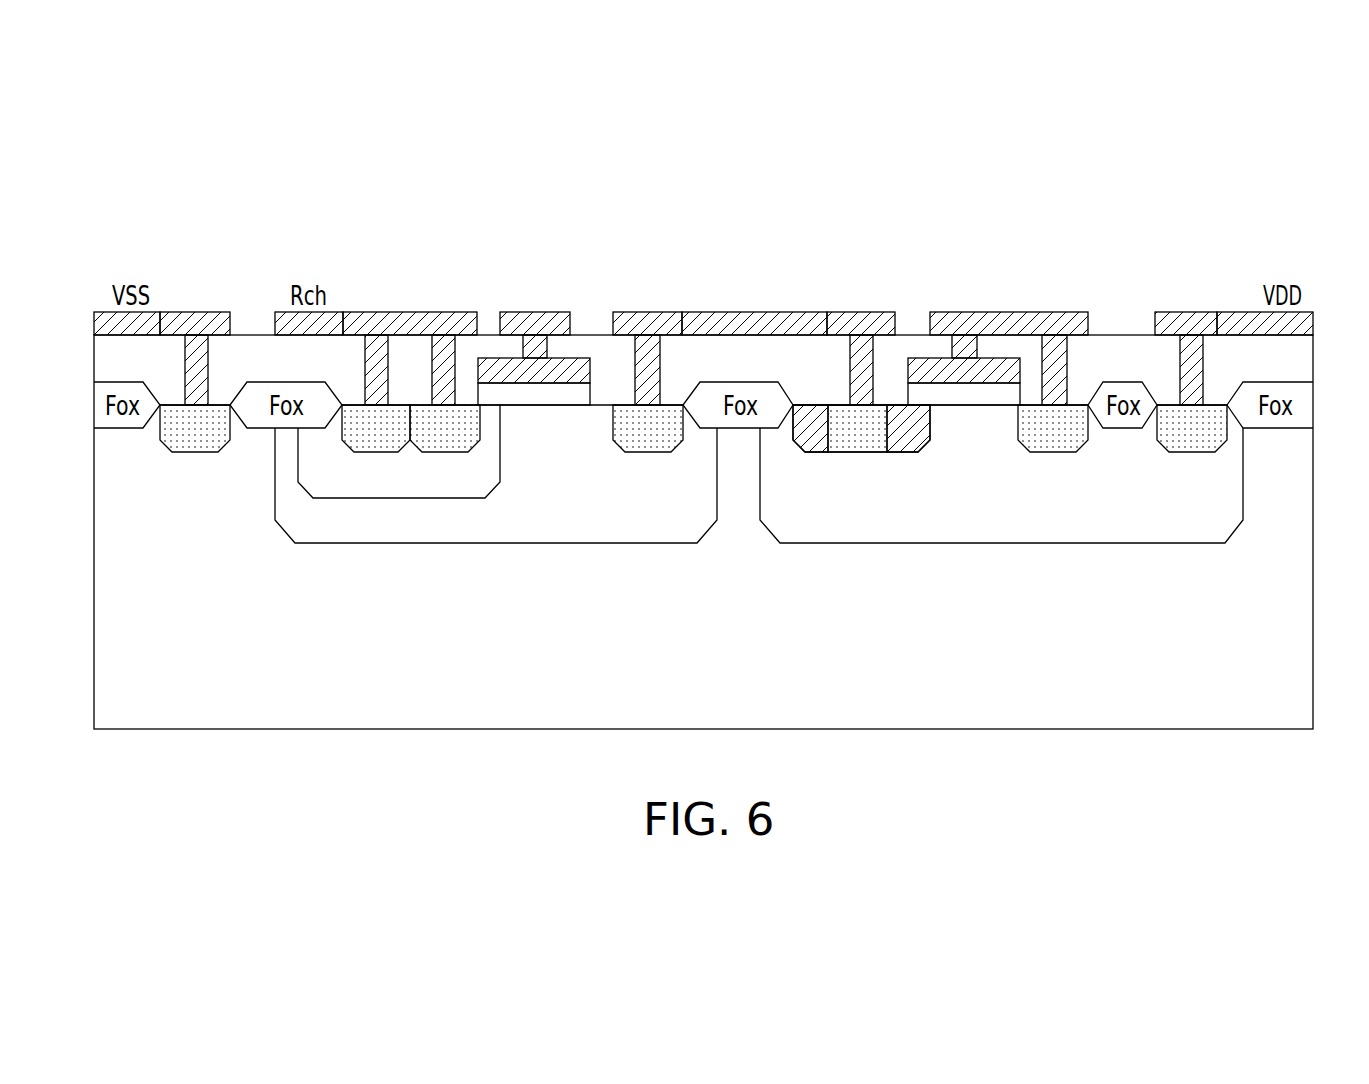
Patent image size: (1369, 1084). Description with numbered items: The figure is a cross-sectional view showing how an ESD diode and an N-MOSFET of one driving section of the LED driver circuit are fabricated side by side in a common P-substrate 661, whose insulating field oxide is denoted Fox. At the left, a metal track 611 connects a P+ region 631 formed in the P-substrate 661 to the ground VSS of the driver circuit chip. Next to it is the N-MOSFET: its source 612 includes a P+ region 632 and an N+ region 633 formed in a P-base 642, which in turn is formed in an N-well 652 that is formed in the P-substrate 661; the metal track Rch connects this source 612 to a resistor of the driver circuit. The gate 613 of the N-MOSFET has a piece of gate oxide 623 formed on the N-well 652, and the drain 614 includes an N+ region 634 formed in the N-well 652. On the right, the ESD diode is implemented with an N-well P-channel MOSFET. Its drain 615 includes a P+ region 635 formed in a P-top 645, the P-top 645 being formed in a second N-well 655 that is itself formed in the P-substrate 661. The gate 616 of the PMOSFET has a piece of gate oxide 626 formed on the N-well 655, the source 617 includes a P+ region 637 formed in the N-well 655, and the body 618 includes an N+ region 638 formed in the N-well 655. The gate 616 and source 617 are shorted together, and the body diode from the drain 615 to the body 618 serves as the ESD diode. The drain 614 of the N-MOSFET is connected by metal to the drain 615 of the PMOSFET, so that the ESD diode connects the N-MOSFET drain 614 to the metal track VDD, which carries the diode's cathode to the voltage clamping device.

The metal track 611 is at (195, 267).
The source 612 is at (415, 267).
The gate 613 is at (535, 267).
The drain 614 is at (647, 267).
The drain 615 is at (860, 267).
The gate 616 is at (965, 267).
The source 617 is at (1058, 267).
The body 618 is at (1190, 267).
The gate oxide 623 is at (558, 397).
The gate oxide 626 is at (963, 397).
The P+ region 631 is at (188, 452).
The P+ region 632 is at (343, 438).
The N+ region 633 is at (472, 452).
The N+ region 634 is at (645, 452).
The P+ region 635 is at (807, 452).
The P+ region 637 is at (1055, 452).
The N+ region 638 is at (1185, 452).
The P-base 642 is at (340, 498).
The P-top 645 is at (917, 452).
The N-well 652 is at (427, 545).
The N-well 655 is at (857, 545).
The P-substrate 661 is at (1283, 673).